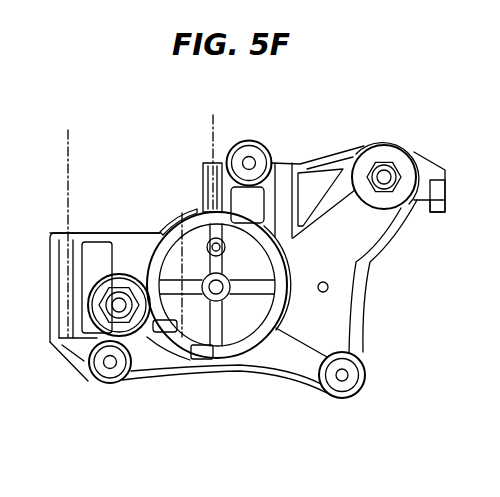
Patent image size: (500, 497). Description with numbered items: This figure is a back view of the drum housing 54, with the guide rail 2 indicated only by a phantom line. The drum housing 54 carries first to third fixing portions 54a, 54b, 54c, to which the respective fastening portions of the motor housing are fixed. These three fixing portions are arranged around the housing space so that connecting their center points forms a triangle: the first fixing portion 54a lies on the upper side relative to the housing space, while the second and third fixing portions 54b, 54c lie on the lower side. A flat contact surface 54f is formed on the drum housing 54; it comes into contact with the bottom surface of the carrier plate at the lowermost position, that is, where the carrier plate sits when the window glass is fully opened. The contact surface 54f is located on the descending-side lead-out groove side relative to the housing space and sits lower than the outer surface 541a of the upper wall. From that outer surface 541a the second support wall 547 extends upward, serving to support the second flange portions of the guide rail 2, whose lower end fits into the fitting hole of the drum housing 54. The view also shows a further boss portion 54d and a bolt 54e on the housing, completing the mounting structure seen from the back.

The guide rail 2 is at (67, 137).
The drum housing 54 is at (384, 118).
The first fixing portion 54a is at (253, 157).
The second fixing portion 54b is at (107, 375).
The third fixing portion 54c is at (343, 387).
The fourth boss portion 54d is at (400, 157).
The bolt 54e is at (104, 323).
The contact surface 54f is at (136, 230).
The outer surface of the upper wall 541a is at (182, 213).
The second support wall 547 is at (213, 163).